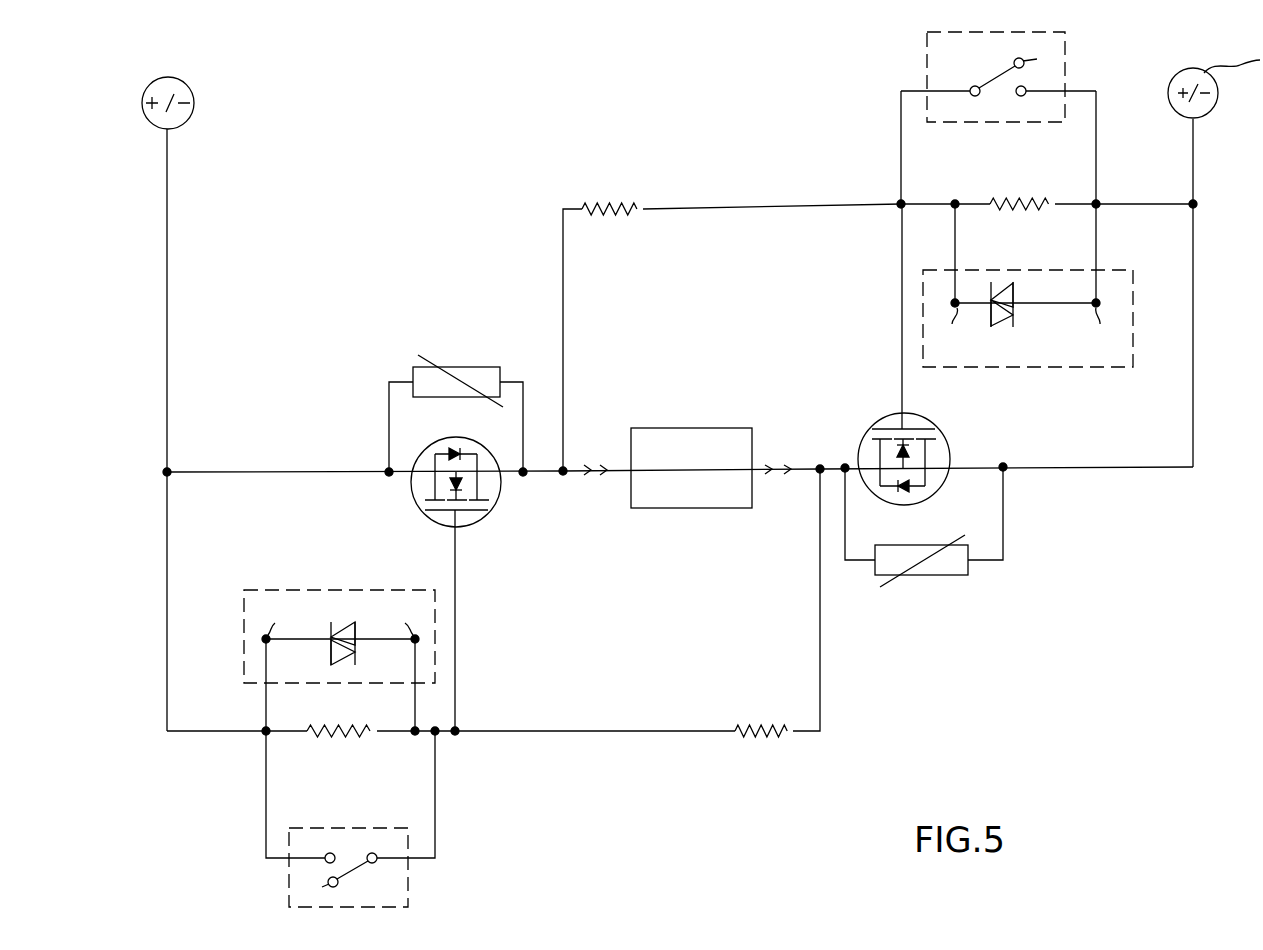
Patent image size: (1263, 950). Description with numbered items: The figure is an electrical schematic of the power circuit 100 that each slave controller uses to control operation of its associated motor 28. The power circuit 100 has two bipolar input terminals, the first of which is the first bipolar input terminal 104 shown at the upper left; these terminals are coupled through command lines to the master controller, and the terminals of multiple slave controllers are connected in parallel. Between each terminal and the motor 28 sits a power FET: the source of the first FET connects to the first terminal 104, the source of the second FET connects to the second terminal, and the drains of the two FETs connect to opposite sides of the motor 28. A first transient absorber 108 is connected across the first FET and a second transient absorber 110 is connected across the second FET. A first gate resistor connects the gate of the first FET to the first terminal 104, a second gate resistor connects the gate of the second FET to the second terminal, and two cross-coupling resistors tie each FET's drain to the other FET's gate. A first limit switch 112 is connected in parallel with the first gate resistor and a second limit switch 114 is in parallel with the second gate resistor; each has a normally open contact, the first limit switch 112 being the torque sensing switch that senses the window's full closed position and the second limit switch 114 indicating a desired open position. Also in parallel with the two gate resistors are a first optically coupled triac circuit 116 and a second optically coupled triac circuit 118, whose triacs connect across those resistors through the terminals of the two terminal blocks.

The power circuit 100 is at (1100, 598).
The first bipolar input terminal 104 is at (180, 88).
The first transient absorber 108 is at (456, 400).
The motor 28 is at (722, 436).
The second transient absorber 110 is at (924, 535).
The second limit switch 114 is at (1043, 32).
The second optically coupled triac circuit 118 is at (1067, 355).
The first optically coupled triac circuit 116 is at (336, 601).
The first limit switch 112 is at (400, 884).